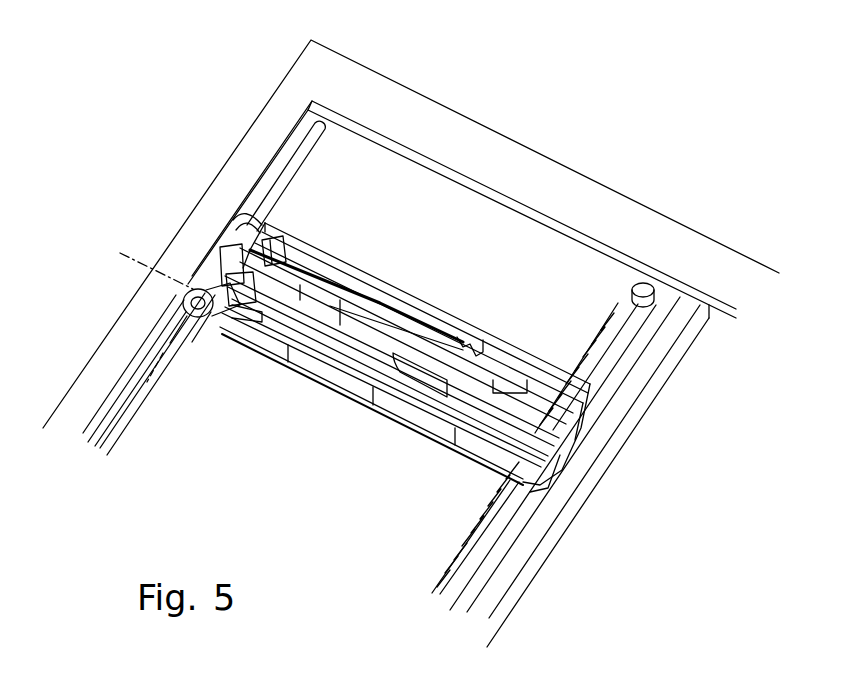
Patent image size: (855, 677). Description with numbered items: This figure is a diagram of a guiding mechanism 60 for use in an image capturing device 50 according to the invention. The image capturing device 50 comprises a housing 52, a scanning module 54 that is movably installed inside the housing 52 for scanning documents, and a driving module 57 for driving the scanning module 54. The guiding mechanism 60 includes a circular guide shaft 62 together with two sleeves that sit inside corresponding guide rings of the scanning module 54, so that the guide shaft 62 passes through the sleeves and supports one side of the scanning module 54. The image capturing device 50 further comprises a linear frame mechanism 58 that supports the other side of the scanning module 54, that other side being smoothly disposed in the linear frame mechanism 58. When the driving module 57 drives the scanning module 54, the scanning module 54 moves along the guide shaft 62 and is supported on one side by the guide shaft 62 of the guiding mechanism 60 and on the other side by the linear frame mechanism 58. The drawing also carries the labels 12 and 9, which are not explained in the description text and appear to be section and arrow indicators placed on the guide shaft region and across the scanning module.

The image capturing device 50 is at (540, 108).
The housing 52 is at (290, 100).
The scanning module 54 is at (413, 325).
The driving module 57 is at (620, 298).
The linear frame mechanism 58 is at (621, 402).
The guiding mechanism 60 is at (195, 262).
The guide shaft 62 is at (137, 402).
The guide rod 12 is at (237, 228).
The section line 9- 9 is at (130, 244).